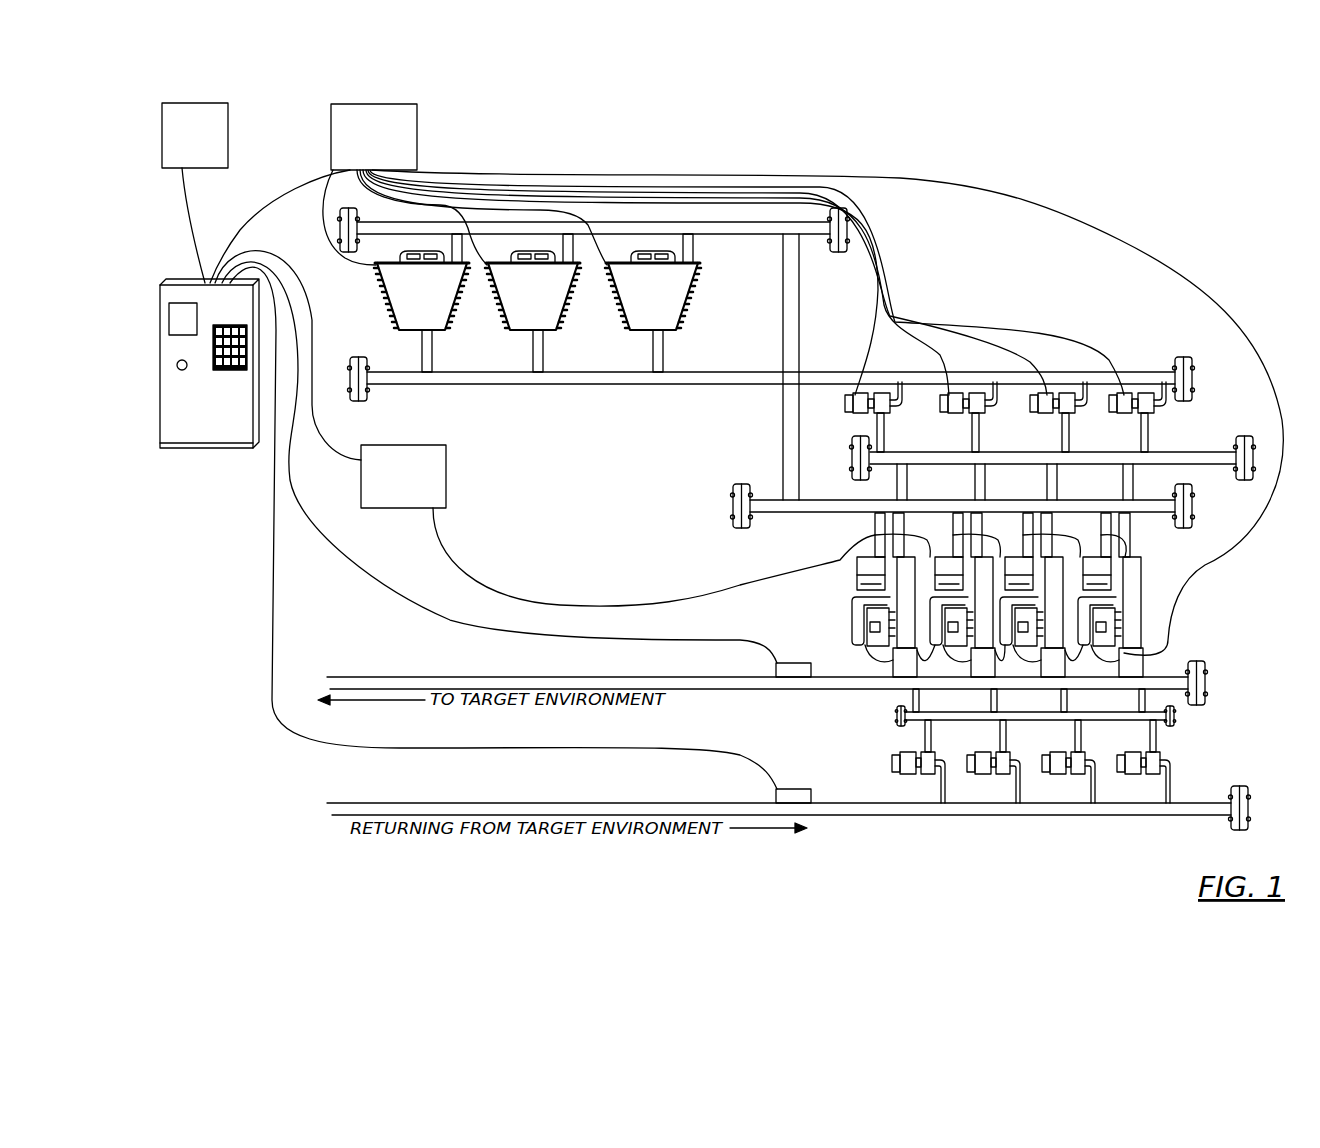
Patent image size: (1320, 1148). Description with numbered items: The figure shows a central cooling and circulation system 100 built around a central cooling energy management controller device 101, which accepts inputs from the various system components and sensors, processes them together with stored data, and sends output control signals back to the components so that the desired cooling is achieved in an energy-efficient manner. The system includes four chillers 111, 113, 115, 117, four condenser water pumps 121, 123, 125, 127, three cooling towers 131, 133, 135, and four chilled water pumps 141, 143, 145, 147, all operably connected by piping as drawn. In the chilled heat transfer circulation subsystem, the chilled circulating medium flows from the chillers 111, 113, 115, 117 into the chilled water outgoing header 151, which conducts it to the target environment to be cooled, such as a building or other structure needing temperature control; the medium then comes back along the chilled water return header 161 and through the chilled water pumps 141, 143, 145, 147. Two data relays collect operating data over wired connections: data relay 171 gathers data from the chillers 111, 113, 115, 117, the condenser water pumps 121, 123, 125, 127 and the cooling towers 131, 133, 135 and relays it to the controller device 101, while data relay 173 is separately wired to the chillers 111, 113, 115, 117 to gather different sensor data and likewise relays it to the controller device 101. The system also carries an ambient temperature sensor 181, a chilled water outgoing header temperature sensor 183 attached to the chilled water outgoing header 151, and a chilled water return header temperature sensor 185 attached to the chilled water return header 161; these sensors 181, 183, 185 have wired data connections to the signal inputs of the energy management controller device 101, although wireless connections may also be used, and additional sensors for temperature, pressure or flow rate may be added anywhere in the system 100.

The central cooling and circulation system 100 is at (1180, 156).
The central cooling energy management controller device 101 is at (196, 450).
The chiller 111 is at (853, 607).
The chiller 113 is at (948, 555).
The chiller 115 is at (1028, 555).
The chiller 117 is at (1140, 632).
The condenser water pump 121 is at (850, 420).
The condenser water pump 123 is at (952, 413).
The condenser water pump 125 is at (1045, 413).
The condenser water pump 127 is at (1150, 412).
The cooling tower 131 is at (385, 308).
The cooling tower 133 is at (497, 322).
The cooling tower 135 is at (698, 302).
The chilled water pump 141 is at (892, 765).
The chilled water pump 143 is at (980, 763).
The chilled water pump 145 is at (1057, 763).
The chilled water pump 147 is at (1160, 762).
The chilled water outgoing header 151 is at (372, 677).
The chilled water return header 161 is at (500, 803).
The data relay 171 is at (746, 379).
The data relay 173 is at (618, 525).
The ambient temperature sensor 181 is at (195, 193).
The chilled water outgoing header temperature sensor 183 is at (797, 663).
The chilled water return header temperature sensor 185 is at (797, 789).